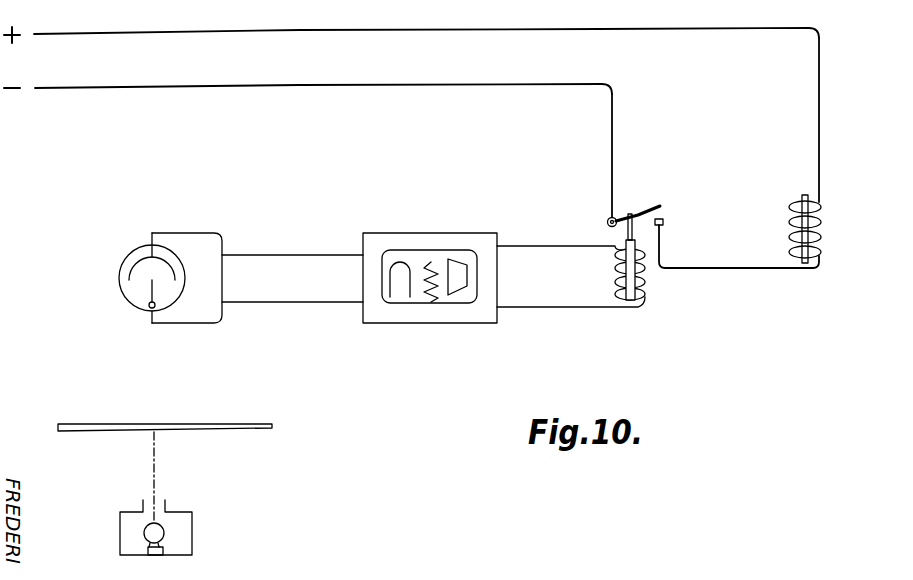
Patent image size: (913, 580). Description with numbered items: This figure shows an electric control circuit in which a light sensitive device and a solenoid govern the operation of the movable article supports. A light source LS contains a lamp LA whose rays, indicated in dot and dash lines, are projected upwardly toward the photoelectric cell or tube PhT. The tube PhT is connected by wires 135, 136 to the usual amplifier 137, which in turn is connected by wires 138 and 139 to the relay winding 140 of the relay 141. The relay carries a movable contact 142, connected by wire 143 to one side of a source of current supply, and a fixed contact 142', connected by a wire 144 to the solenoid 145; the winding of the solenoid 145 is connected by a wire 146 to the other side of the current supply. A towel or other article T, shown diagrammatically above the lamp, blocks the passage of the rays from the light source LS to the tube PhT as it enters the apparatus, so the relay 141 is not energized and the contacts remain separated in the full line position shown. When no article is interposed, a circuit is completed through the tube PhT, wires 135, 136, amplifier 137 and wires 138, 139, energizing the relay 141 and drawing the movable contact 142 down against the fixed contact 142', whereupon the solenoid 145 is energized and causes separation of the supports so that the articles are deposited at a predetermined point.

The photoelectric cell or tube PhT is at (128, 306).
The wire 135 is at (272, 302).
The wire 136 is at (277, 255).
The amplifier 137 is at (420, 233).
The wire 138 is at (540, 245).
The wire 139 is at (552, 307).
The relay winding 140 is at (645, 285).
The relay 141 is at (625, 312).
The movable contact 142 is at (670, 198).
The fixed contact 142' is at (696, 224).
The wire 143 is at (612, 137).
The wire 144 is at (727, 268).
The solenoid 145 is at (826, 227).
The wire 146 is at (819, 120).
The towel or other article T is at (250, 431).
The lamp LA is at (165, 532).
The light source LS is at (119, 543).